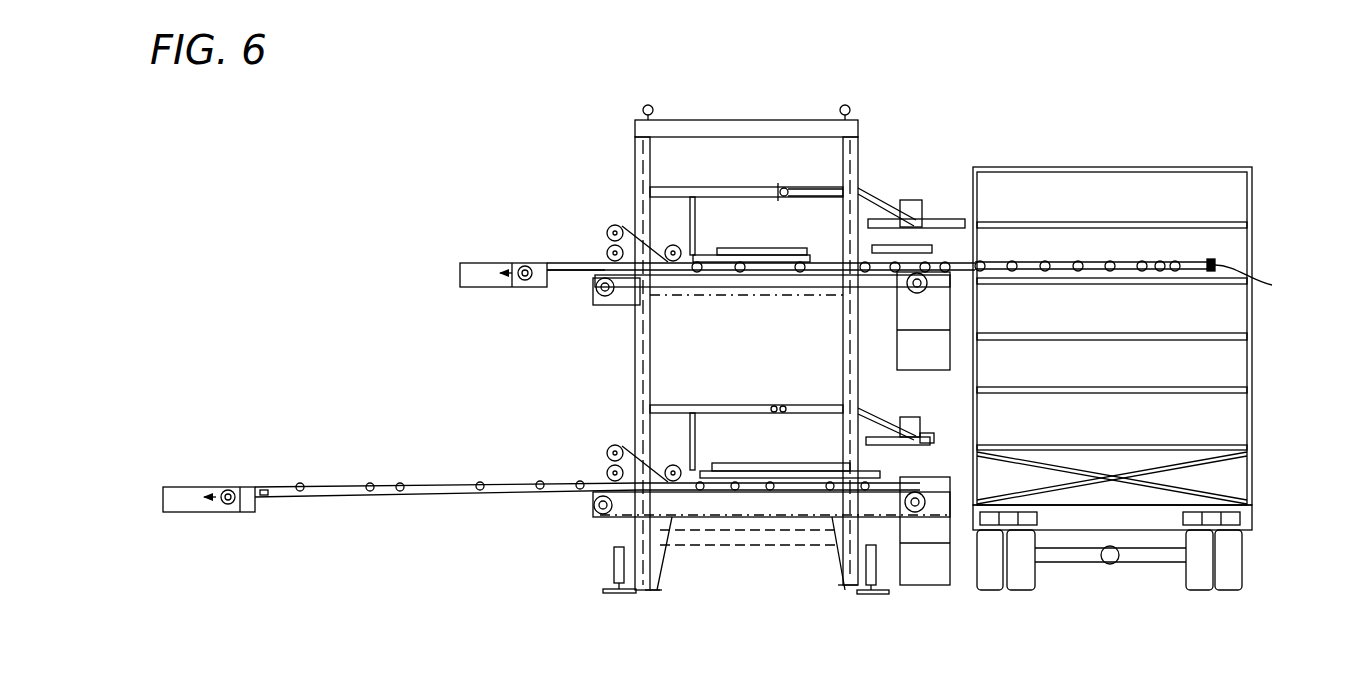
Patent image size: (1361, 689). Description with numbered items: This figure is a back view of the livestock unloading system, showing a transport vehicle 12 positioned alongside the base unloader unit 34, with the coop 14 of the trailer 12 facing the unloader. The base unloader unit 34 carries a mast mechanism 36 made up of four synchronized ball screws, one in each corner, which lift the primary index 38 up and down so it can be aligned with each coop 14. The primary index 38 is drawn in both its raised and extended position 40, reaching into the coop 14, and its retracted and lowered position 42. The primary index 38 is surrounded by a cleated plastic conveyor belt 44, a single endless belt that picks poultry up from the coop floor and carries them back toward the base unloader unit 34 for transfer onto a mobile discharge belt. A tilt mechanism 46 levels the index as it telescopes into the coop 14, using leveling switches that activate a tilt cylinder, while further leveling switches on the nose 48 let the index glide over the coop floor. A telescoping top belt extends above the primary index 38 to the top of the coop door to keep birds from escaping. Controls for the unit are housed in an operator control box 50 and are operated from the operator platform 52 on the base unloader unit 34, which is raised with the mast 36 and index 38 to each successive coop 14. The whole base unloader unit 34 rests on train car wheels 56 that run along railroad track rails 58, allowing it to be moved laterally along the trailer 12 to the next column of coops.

The transport vehicle 12 is at (1272, 178).
The coop 14 is at (1240, 304).
The base unloader unit 34 is at (599, 185).
The mast mechanism 36 is at (632, 150).
The primary index 38 is at (495, 262).
The raised and extended position 40 is at (396, 320).
The retracted and lowered position 42 is at (140, 450).
The cleated plastic conveyor belt 44 is at (765, 248).
The tilt mechanism 46 is at (848, 285).
The nose 48 is at (1240, 283).
The operator control box 50 is at (912, 200).
The operator platform 52 is at (952, 315).
The train car wheels 56 is at (613, 566).
The railroad track rails 58 is at (622, 595).